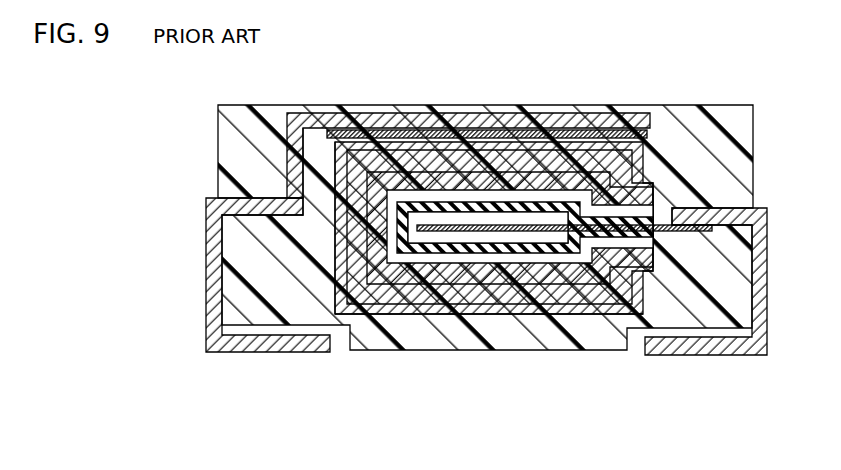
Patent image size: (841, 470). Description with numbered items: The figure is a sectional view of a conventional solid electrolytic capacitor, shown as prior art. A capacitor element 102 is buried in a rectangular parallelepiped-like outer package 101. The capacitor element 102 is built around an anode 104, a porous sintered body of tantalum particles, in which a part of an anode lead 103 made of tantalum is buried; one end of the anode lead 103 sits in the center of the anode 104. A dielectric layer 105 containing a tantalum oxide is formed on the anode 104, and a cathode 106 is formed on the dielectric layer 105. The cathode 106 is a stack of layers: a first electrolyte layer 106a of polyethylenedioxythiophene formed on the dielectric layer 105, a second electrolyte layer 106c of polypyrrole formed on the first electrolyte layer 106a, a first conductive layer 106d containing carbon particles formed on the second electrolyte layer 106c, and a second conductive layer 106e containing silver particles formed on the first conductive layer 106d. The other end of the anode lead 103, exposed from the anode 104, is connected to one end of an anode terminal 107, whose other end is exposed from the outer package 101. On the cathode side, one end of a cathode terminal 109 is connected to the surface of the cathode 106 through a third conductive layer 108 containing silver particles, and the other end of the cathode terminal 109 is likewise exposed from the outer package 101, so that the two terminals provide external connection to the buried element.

The outer package 101 is at (218, 135).
The capacitor element 102 is at (326, 246).
The anode lead 103 is at (697, 239).
The anode 104 is at (422, 242).
The dielectric layer 105 is at (401, 250).
The cathode 106 is at (494, 275).
The first electrolyte layer 106a is at (645, 379).
The second electrolyte layer 106c is at (515, 266).
The first conductive layer 106d is at (570, 302).
The second conductive layer 106e is at (618, 312).
The anode terminal 107 is at (767, 324).
The third conductive layer 108 is at (647, 134).
The cathode terminal 109 is at (206, 269).